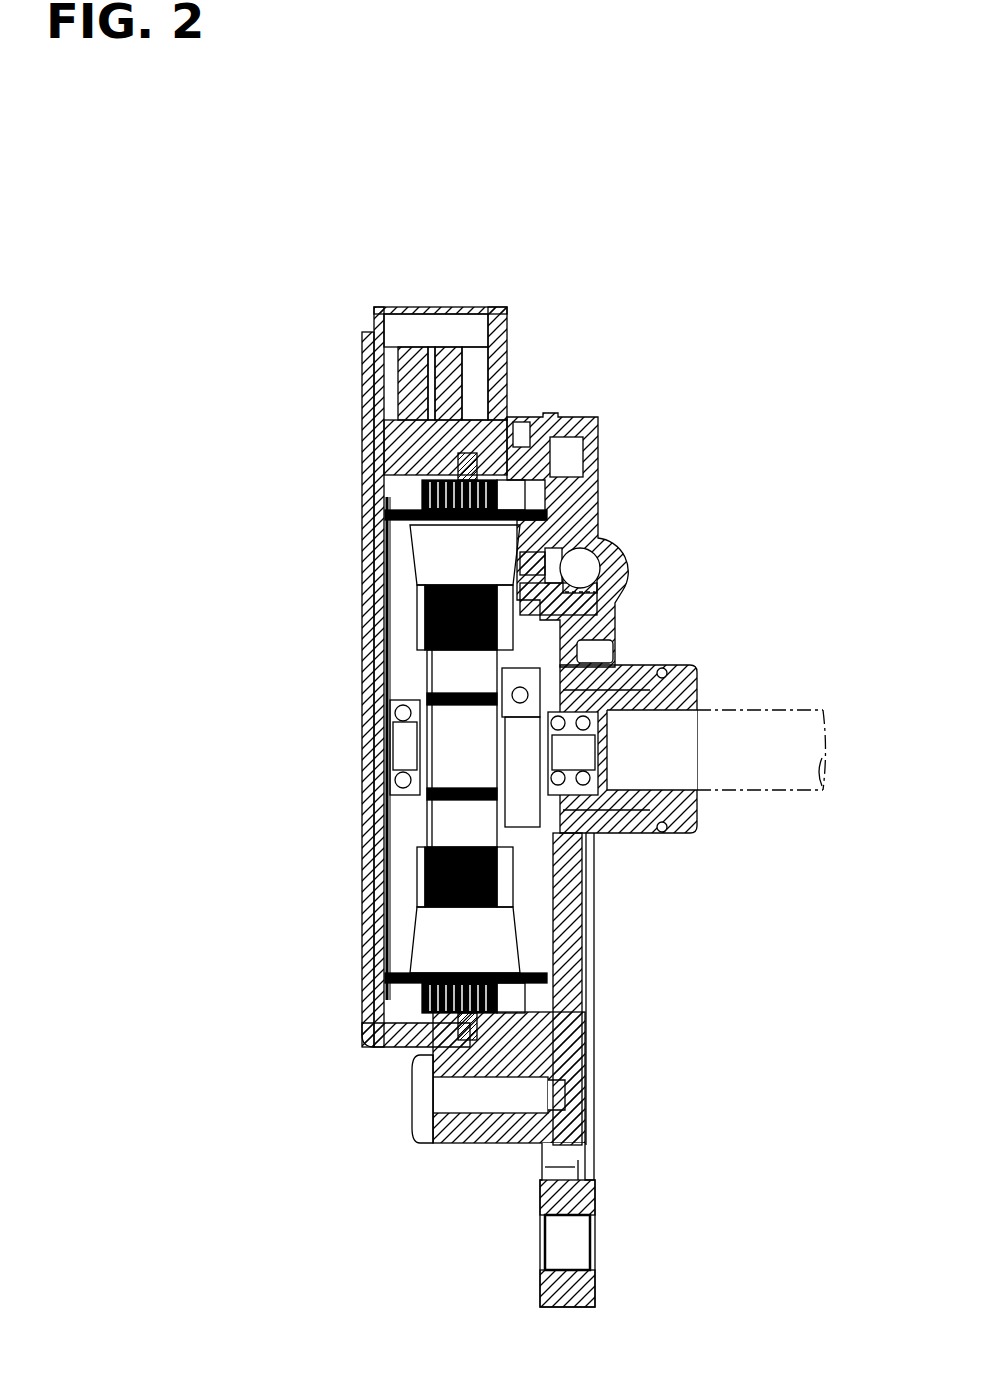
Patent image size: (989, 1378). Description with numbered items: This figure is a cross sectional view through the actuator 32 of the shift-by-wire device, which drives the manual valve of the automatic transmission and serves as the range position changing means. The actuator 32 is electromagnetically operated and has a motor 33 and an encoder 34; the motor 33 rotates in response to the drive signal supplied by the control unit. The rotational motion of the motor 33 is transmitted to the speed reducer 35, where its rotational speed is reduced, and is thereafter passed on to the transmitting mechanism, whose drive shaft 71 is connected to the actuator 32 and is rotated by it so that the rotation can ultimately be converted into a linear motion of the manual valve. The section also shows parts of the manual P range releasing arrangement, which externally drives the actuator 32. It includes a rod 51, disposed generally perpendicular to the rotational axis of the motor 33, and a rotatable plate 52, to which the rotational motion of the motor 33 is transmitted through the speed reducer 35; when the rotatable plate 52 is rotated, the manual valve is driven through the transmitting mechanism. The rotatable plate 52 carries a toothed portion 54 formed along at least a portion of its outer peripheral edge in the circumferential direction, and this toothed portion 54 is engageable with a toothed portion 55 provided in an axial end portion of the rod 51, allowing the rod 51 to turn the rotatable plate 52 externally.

The actuator 32 is at (561, 405).
The motor 33 is at (362, 900).
The encoder 34 is at (360, 842).
The speed reducer 35 is at (550, 857).
The rod 51 is at (577, 565).
The rotatable plate 52 is at (592, 640).
The toothed portion 54 is at (612, 548).
The toothed portion 55 is at (596, 596).
The drive shaft 71 is at (773, 710).